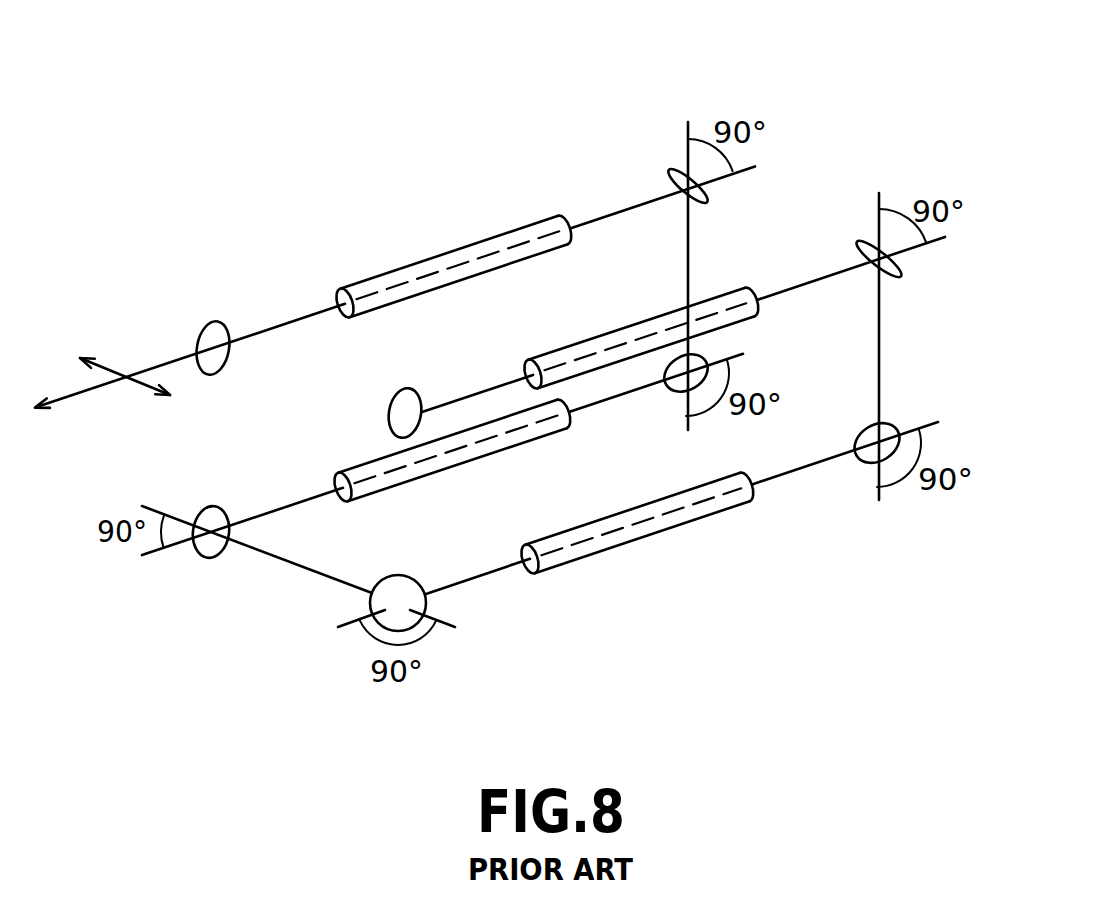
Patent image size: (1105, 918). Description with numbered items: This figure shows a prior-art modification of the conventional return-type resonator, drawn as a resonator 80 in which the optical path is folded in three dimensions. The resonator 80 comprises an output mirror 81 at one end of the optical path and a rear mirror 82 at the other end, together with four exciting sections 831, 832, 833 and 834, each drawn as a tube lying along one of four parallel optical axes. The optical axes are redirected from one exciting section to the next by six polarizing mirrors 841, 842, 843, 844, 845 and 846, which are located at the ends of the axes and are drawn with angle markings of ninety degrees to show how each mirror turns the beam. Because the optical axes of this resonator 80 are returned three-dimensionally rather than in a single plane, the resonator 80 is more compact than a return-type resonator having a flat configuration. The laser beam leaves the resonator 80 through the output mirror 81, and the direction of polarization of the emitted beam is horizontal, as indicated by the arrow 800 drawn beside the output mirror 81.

The resonator 80 is at (870, 135).
The output mirror 81 is at (205, 321).
The rear mirror 82 is at (395, 390).
The arrow 800 is at (133, 383).
The exciting section 831 is at (488, 240).
The exciting section 832 is at (576, 343).
The exciting section 833 is at (500, 451).
The exciting section 834 is at (725, 511).
The polarizing mirror 841 is at (710, 193).
The polarizing mirror 842 is at (707, 351).
The polarizing mirror 843 is at (227, 558).
The polarizing mirror 844 is at (427, 600).
The polarizing mirror 845 is at (890, 425).
The polarizing mirror 846 is at (903, 262).